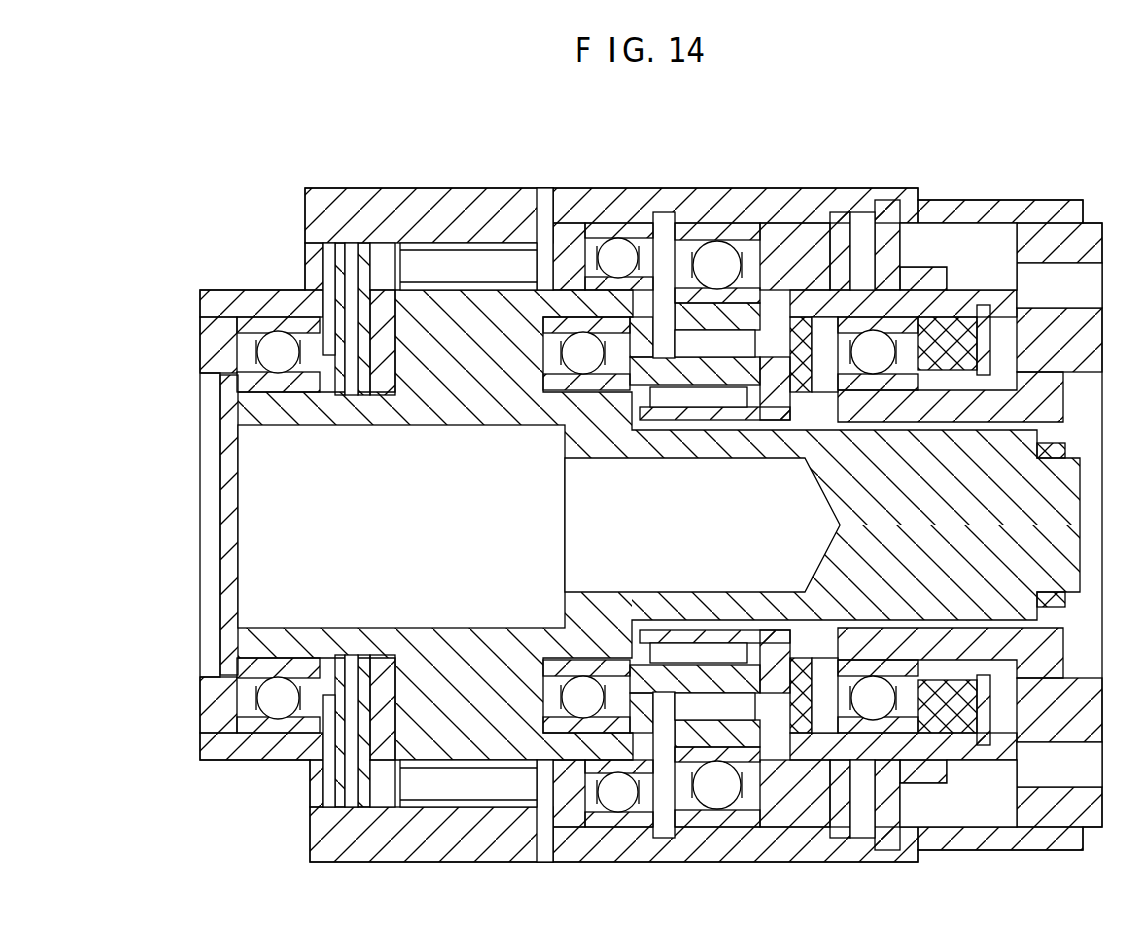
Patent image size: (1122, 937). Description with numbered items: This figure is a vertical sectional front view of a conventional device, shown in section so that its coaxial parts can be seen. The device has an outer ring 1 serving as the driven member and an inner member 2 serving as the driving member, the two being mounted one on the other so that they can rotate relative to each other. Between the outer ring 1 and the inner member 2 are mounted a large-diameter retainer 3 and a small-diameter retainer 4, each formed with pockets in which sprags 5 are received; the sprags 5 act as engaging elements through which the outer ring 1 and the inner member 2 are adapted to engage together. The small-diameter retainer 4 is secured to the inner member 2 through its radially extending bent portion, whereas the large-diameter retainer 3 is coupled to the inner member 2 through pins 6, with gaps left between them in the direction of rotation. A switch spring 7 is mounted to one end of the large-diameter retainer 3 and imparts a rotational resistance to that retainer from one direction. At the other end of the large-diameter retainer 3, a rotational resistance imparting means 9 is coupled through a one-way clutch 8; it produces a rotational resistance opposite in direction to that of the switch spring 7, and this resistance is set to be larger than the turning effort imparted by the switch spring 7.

The outer ring 1 is at (606, 200).
The inner member 2 is at (422, 418).
The large-diameter retainer 3 is at (660, 255).
The small-diameter retainer 4 is at (545, 247).
The sprags 5 is at (463, 267).
The pins 6 is at (372, 245).
The switch spring 7 is at (317, 772).
The one-way clutch 8 is at (722, 378).
The rotational resistance imparting means 9 is at (822, 340).